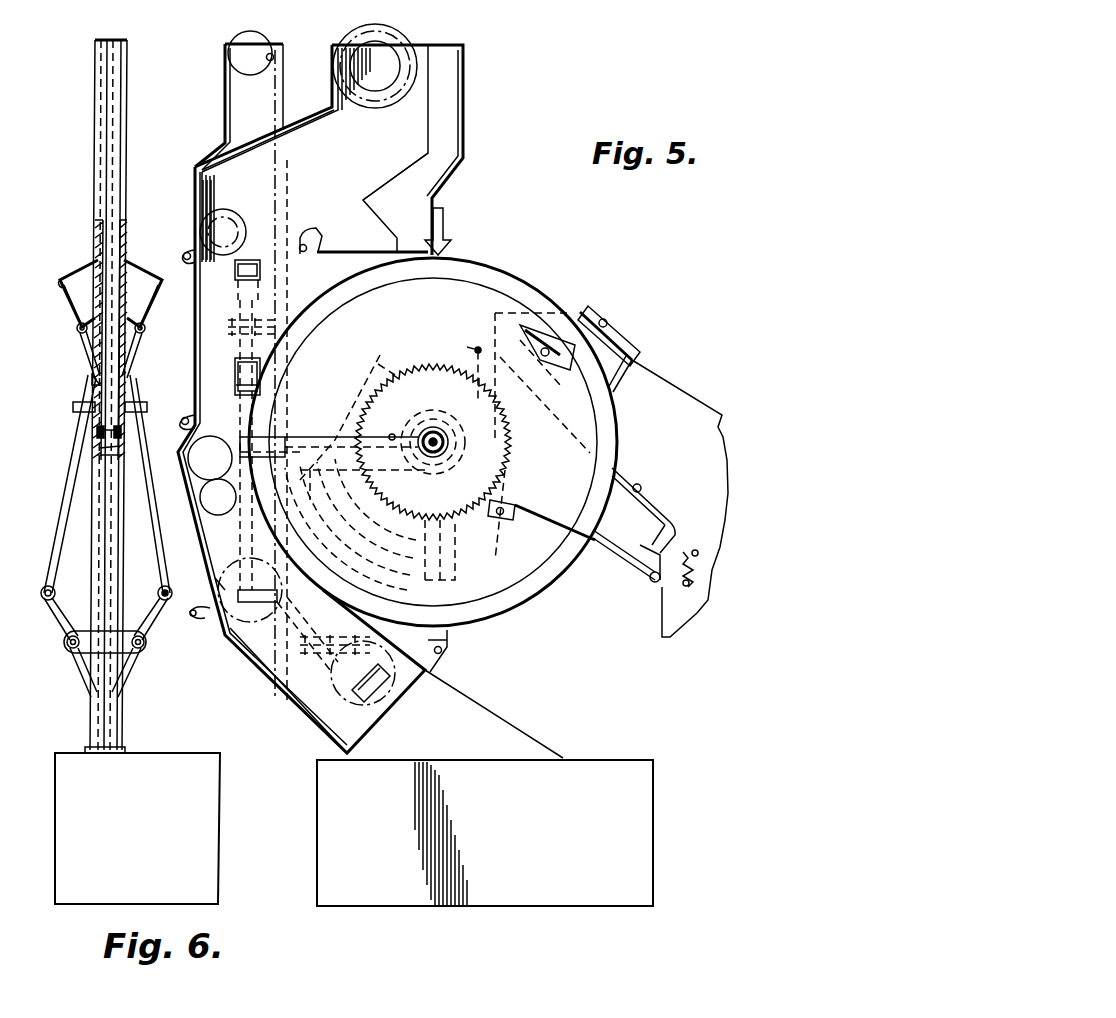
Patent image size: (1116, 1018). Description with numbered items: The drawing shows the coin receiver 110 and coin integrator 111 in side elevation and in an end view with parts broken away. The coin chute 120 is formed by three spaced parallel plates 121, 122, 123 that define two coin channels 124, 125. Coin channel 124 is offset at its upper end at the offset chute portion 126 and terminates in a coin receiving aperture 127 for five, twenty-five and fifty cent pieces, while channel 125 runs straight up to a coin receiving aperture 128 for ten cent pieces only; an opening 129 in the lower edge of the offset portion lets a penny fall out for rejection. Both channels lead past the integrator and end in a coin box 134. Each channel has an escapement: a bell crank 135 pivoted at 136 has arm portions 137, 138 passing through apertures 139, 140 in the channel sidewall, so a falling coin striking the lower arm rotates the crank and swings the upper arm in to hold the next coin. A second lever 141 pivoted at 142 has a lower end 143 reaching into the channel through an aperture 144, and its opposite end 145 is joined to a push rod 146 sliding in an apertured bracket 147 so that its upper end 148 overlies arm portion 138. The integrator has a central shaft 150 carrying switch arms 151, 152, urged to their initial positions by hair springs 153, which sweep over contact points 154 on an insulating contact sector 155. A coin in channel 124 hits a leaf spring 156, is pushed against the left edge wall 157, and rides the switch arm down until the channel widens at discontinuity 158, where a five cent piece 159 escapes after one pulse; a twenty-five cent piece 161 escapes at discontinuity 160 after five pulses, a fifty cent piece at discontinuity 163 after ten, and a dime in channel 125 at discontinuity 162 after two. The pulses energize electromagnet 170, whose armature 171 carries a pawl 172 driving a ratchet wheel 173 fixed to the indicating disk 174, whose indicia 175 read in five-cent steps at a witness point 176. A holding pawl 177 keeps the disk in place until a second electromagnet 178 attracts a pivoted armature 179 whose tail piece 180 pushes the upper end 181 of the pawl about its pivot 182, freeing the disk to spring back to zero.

In FIG. 5, the coin receiver 110 is at (479, 60).
In FIG. 5, the coin integrator 111 is at (566, 272).
In FIG. 5, the coin chute mechanism 120 is at (470, 104).
In FIG. 6, the plate 121 is at (122, 140).
In FIG. 6, the plate 122 is at (100, 130).
In FIG. 6, the plate 123 is at (95, 160).
In FIG. 5, the coin channel 124 is at (200, 298).
In FIG. 6, the coin channel 124 is at (122, 196).
In FIG. 5, the coin channel 125 is at (232, 112).
In FIG. 6, the coin channel 125 is at (100, 188).
In FIG. 5, the offset chute portion 126 is at (330, 122).
In FIG. 5, the coin receiving aperture 127 is at (345, 45).
In FIG. 5, the coin receiving aperture 128 is at (275, 57).
In FIG. 5, the opening 129 is at (363, 200).
In FIG. 5, the coin box 134 is at (655, 855).
In FIG. 6, the coin box 134 is at (212, 855).
In FIG. 6, the bell crank 135 is at (66, 300).
In FIG. 6, the pivot 136 is at (76, 330).
In FIG. 6, the arm portion 137 is at (82, 265).
In FIG. 6, the arm portion 138 is at (92, 380).
In FIG. 6, the aperture 139 is at (62, 282).
In FIG. 6, the aperture 140 is at (80, 400).
In FIG. 6, the second lever 141 is at (60, 625).
In FIG. 6, the pivot 142 is at (78, 664).
In FIG. 6, the lower end 143 is at (80, 692).
In FIG. 5, the aperture 144 is at (330, 737).
In FIG. 6, the opposite end 145 is at (60, 610).
In FIG. 6, the push rod 146 is at (72, 493).
In FIG. 6, the apertured bracket 147 is at (85, 418).
In FIG. 6, the upper end 148 is at (90, 370).
In FIG. 5, the central shaft 150 is at (420, 456).
In FIG. 5, the switch arm 151 is at (385, 358).
In FIG. 6, the switch arm 151 is at (122, 438).
In FIG. 5, the switch arm 152 is at (386, 369).
In FIG. 6, the switch arm 152 is at (100, 442).
In FIG. 5, the hair spring 153 is at (417, 398).
In FIG. 5, the contact points 154 is at (329, 453).
In FIG. 5, the contact sector 155 is at (365, 486).
In FIG. 5, the leaf spring 156 is at (285, 412).
In FIG. 5, the left edge wall 157 is at (197, 392).
In FIG. 5, the discontinuity 158 is at (200, 470).
In FIG. 5, the coin 159 is at (218, 434).
In FIG. 5, the discontinuity 160 is at (228, 620).
In FIG. 5, the coin 161 is at (220, 570).
In FIG. 5, the discontinuity 162 is at (195, 530).
In FIG. 5, the discontinuity 163 is at (350, 702).
In FIG. 5, the electromagnet 170 is at (665, 510).
In FIG. 5, the armature 171 is at (607, 545).
In FIG. 5, the pawl 172 is at (500, 522).
In FIG. 5, the ratchet wheel 173 is at (400, 512).
In FIG. 5, the indicating disk 174 is at (462, 285).
In FIG. 5, the indicia 175 is at (493, 290).
In FIG. 5, the witness point 176 is at (445, 230).
In FIG. 5, the pawl 177 is at (532, 455).
In FIG. 5, the second electromagnet 178 is at (636, 355).
In FIG. 5, the pivoted armature 179 is at (560, 410).
In FIG. 5, the tail piece 180 is at (478, 335).
In FIG. 5, the upper end 181 is at (467, 347).
In FIG. 5, the pivot 182 is at (530, 385).